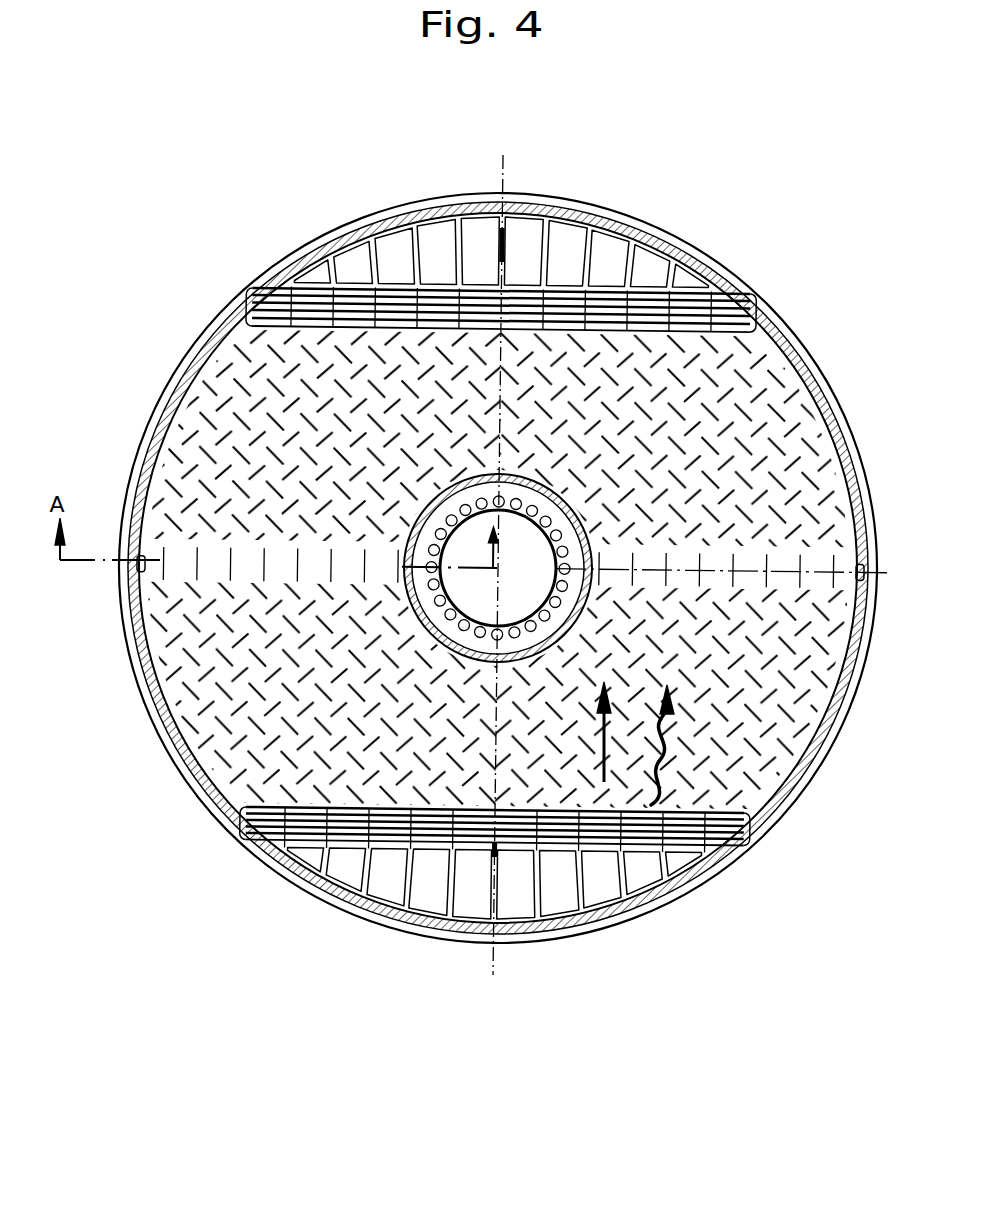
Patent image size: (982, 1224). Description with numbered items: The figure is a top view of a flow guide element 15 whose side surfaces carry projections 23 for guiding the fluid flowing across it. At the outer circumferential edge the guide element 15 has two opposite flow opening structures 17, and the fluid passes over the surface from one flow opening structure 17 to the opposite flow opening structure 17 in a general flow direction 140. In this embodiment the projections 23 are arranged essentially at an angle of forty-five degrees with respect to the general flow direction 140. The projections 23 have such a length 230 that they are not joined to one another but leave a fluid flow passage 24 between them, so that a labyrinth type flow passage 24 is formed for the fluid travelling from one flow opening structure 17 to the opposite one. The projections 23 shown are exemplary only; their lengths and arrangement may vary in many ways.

The flow guide element 15 is at (778, 368).
The flow opening structure 17 is at (573, 240).
The projections 23 is at (770, 570).
The length 230 is at (767, 743).
The fluid flow passage 24 is at (648, 808).
The general flow direction 140 is at (605, 745).